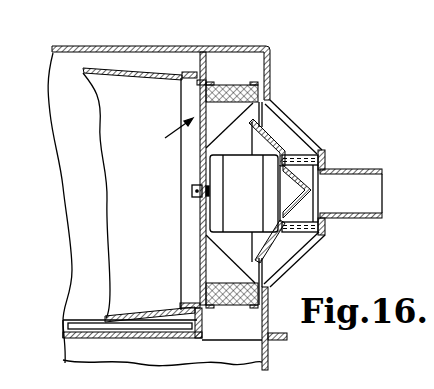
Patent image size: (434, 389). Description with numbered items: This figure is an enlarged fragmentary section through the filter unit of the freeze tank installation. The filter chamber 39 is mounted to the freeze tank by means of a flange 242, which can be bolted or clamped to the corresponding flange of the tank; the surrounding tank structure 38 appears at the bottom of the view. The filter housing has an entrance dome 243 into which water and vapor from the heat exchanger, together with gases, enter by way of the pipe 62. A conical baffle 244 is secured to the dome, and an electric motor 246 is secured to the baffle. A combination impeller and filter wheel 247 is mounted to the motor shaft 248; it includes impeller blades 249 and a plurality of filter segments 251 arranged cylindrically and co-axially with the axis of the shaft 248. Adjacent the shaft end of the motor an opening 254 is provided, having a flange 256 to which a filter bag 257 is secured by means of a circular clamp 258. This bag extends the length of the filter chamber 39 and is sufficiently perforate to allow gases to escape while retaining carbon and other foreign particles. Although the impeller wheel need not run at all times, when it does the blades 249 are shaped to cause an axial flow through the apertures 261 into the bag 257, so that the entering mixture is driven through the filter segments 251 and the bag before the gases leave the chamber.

The floor / ground surface 38 is at (268, 364).
The filter chamber 39 is at (197, 46).
The pipe 62 is at (352, 170).
The flange 242 is at (287, 337).
The entrance dome 243 is at (303, 131).
The conical baffle 244 is at (277, 140).
The electric motor 246 is at (250, 196).
The combination impeller and filter wheel 247 is at (168, 134).
The motor shaft 248 is at (192, 192).
The impeller blades 249 is at (240, 128).
The filter segments 251 is at (246, 68).
The opening 254 is at (188, 101).
The flange 256 is at (183, 88).
The filter bag 257 is at (108, 312).
The circular clamp 258 is at (184, 73).
The apertures 261 is at (200, 135).